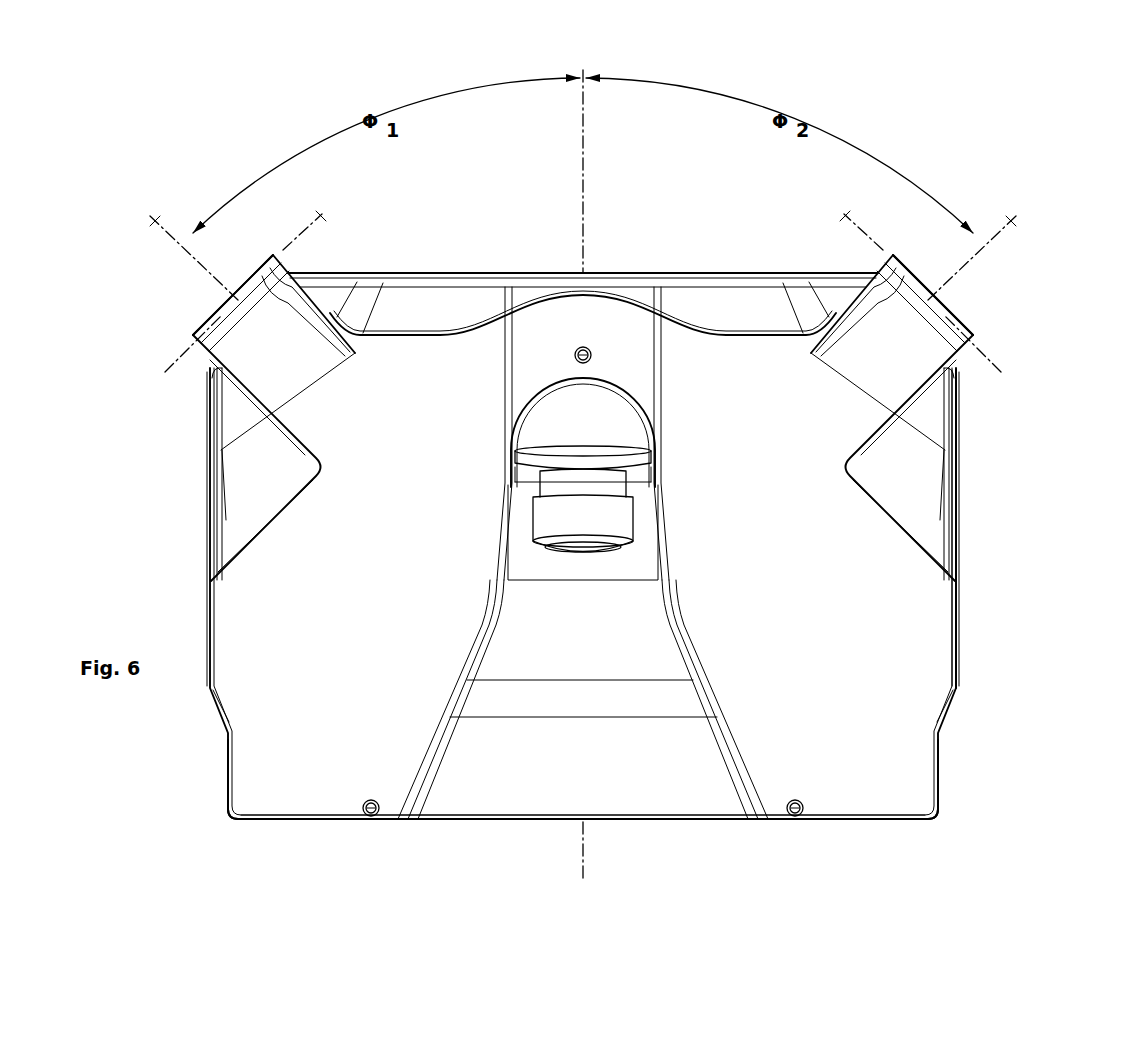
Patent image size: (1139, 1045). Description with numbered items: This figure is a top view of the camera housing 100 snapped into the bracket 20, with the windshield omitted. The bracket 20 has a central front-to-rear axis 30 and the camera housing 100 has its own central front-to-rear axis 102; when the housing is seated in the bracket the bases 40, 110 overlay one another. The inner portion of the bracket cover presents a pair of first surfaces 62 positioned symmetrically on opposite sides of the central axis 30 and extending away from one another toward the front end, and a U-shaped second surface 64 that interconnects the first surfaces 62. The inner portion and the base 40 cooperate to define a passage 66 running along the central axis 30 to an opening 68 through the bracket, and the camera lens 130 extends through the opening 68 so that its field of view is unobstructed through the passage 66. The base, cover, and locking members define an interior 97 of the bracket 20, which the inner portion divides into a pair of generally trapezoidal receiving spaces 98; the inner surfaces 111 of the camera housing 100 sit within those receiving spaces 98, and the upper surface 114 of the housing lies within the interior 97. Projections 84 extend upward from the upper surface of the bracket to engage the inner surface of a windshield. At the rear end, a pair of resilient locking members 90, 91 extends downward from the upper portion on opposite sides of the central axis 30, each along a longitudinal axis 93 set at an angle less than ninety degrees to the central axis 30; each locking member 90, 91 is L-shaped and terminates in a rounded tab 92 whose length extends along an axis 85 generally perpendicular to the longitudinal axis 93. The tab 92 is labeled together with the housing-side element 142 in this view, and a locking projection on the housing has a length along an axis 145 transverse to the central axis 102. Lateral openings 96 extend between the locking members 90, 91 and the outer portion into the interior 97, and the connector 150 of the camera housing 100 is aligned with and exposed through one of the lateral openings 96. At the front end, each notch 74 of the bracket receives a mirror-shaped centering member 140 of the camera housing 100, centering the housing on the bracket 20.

The bracket 20 is at (987, 620).
The central front-to-rear axis 30 is at (649, 475).
The central front-to-rear axis 102 is at (582, 833).
The base 40 is at (587, 788).
The first surfaces 62 is at (510, 528).
The second surface 64 is at (430, 742).
The passage 66 is at (533, 787).
The opening 68 is at (604, 380).
The notch 74 is at (599, 779).
The centering member 140 is at (228, 793).
The projections 84 is at (702, 370).
The axis 85 is at (583, 208).
The axis 145 is at (313, 232).
The resilient locking member 90 is at (278, 353).
The resilient locking member 91 is at (895, 360).
The rounded tab 92 is at (588, 313).
The cap end face 142 is at (205, 354).
The longitudinal axis 93 is at (157, 224).
The lateral openings 96 is at (268, 483).
The interior 97 is at (440, 388).
The receiving spaces 98 is at (307, 705).
The camera housing 100 is at (962, 552).
The base 110 is at (583, 721).
The inner surfaces 111 is at (477, 665).
The upper surface 114 is at (744, 358).
The camera lens 130 is at (583, 550).
The connector 150 is at (960, 505).